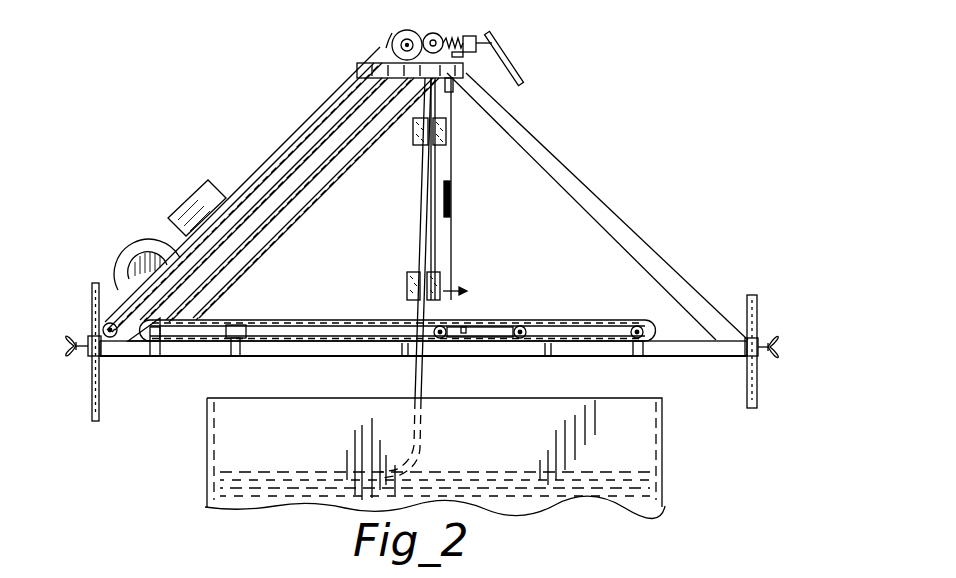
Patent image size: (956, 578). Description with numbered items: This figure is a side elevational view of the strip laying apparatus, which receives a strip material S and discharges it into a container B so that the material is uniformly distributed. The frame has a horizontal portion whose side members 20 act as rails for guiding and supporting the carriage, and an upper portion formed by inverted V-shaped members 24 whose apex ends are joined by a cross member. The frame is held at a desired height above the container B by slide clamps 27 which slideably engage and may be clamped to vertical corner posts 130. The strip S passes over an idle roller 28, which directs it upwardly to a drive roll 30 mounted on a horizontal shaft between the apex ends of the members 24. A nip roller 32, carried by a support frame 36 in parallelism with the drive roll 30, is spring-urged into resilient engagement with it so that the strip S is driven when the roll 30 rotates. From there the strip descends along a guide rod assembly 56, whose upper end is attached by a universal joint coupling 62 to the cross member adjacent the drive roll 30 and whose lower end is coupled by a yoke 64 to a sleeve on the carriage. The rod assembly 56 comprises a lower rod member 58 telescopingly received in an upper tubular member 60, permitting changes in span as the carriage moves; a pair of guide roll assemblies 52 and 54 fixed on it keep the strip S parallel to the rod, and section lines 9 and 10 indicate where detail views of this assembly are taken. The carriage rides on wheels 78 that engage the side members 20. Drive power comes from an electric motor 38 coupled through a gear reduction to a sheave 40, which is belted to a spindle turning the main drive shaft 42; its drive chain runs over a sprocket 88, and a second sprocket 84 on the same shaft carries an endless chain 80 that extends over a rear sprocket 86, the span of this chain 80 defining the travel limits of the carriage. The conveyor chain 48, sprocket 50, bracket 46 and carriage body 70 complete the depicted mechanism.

The side member 20 is at (302, 352).
The inverted V-shaped member 24 is at (262, 226).
The slide clamp 27 is at (87, 338).
The idle roller 28 is at (110, 277).
The drive roll 30 is at (392, 33).
The nip roller 32 is at (434, 33).
The support frame 36 is at (470, 26).
The electric motor 38 is at (200, 180).
The sheave 40 is at (150, 245).
The main drive shaft 42 is at (157, 347).
The support bracket 46 is at (195, 337).
The conveyor chain 48 is at (313, 185).
The apex sprocket 50 is at (405, 30).
The guide roll assembly 52 is at (396, 118).
The guide roll assembly 54 is at (408, 280).
The guide rod assembly 56 is at (460, 180).
The lower rod member 58 is at (449, 241).
The upper tubular member 60 is at (447, 125).
The universal joint coupling 62 is at (453, 88).
The yoke 64 is at (446, 312).
The carriage 70 is at (500, 320).
The wheel 78 is at (550, 320).
The endless chain 80 is at (302, 320).
The second sprocket 84 is at (237, 325).
The sprocket 86 is at (653, 325).
The sprocket 88 is at (238, 342).
The vertical corner post 130 is at (88, 387).
The section line 9 is at (397, 127).
The section line 10 is at (452, 193).
The strip material S is at (423, 243).
The container B is at (290, 449).